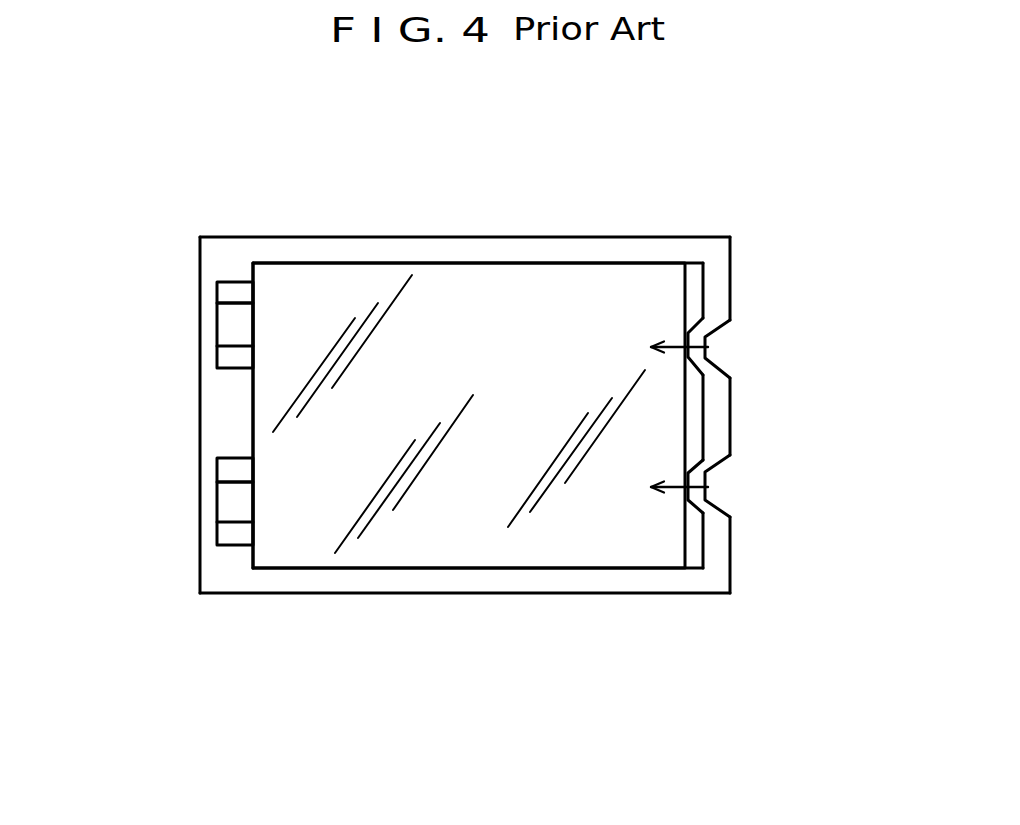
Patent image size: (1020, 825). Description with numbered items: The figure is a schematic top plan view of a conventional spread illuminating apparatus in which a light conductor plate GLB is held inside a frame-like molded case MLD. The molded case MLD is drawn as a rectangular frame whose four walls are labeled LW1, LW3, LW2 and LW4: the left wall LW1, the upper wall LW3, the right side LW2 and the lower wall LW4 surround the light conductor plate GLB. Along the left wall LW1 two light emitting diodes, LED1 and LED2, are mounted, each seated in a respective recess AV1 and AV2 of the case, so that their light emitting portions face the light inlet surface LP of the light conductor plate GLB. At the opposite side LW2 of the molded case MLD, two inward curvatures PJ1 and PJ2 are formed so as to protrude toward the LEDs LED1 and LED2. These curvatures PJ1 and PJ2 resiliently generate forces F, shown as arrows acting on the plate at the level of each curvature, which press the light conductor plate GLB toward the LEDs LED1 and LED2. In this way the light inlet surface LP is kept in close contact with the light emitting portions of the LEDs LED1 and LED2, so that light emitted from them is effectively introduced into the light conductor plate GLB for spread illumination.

The light inlet surface LP is at (252, 292).
The frame-like molded case MLD is at (278, 237).
The upper frame wall LW3 is at (434, 231).
The light conductor plate GLB is at (587, 277).
The first LED cavity AV1 is at (230, 293).
The LED LED1 is at (228, 322).
The left frame wall LW1 is at (181, 407).
The second LED cavity AV2 is at (233, 472).
The LED LED2 is at (227, 502).
The inward curvature PJ1 is at (712, 349).
The side of the molded case LW2 is at (739, 415).
The inward curvature PJ2 is at (720, 490).
The lower frame wall LW4 is at (541, 597).
The force F is at (668, 418).